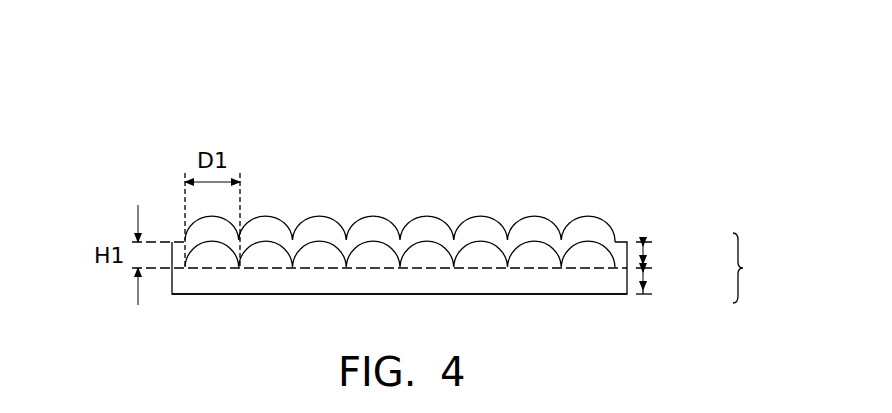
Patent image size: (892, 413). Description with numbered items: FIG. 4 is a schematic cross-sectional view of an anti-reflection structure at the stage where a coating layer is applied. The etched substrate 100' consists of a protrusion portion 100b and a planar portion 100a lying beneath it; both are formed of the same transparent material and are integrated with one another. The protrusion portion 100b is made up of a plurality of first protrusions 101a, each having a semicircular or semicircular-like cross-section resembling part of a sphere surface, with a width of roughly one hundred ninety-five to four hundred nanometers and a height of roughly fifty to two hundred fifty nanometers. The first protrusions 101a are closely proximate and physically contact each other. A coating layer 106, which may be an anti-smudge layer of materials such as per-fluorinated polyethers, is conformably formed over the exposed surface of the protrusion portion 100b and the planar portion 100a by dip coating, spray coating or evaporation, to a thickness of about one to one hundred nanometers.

The substrate 100' is at (464, 268).
The planar portion 100a is at (646, 281).
The protrusion portion 100b is at (646, 257).
The first protrusions 101a is at (587, 250).
The coating layer 106 is at (585, 222).